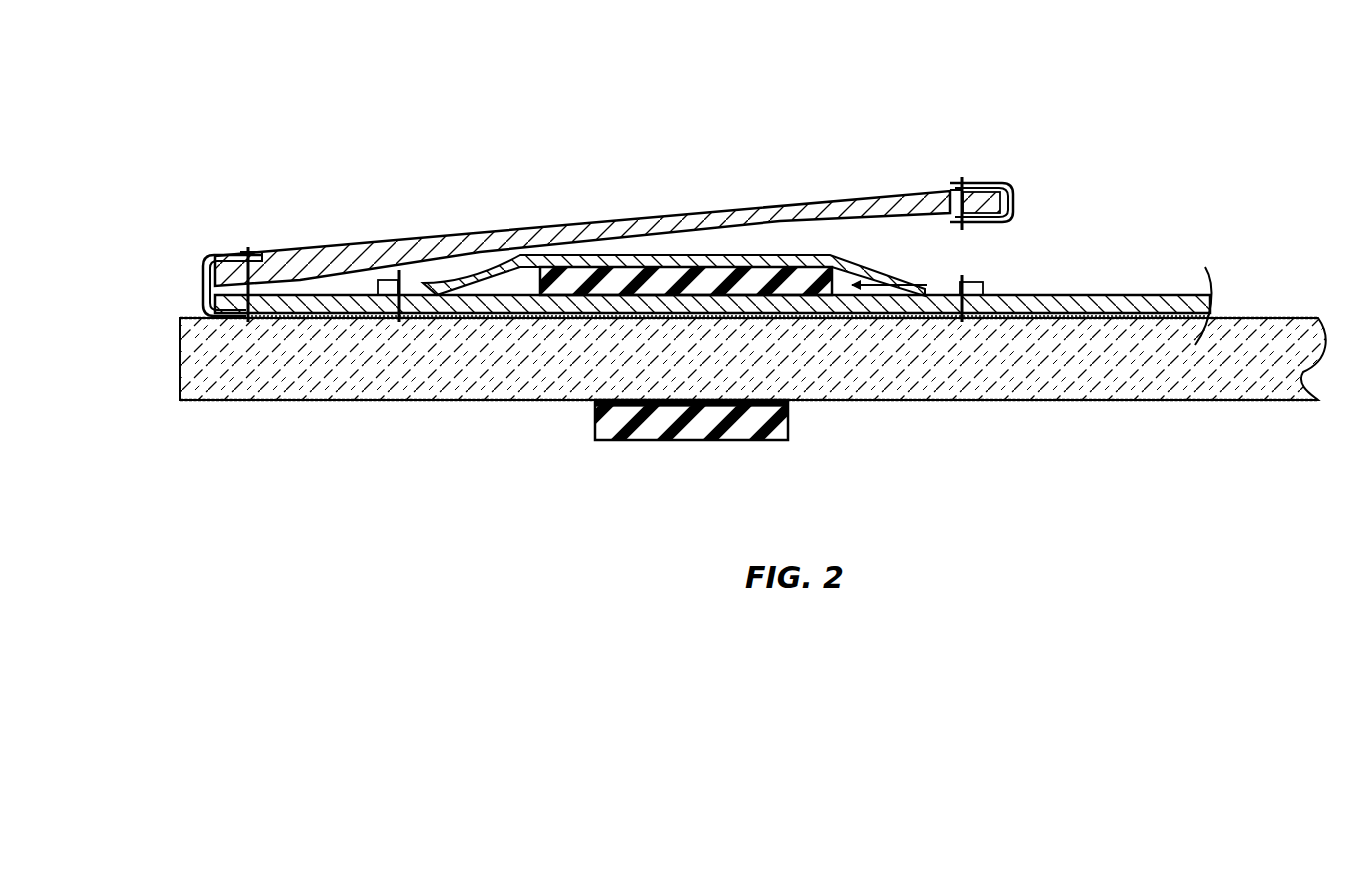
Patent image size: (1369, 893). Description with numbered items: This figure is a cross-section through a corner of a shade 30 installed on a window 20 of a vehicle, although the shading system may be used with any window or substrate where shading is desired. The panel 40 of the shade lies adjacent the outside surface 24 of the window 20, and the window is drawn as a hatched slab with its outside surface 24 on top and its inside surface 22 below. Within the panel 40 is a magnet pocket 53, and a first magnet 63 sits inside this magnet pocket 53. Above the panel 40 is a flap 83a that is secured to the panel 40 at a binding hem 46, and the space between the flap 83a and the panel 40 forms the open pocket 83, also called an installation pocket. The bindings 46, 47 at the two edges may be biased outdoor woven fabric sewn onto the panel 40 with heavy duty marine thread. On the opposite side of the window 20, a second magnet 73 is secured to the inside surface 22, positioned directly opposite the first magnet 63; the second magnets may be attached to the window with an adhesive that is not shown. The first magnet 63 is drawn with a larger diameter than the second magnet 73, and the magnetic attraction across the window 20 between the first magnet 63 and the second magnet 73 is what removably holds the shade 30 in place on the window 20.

The window 20 is at (1193, 372).
The inside surface 22 is at (1127, 402).
The outside surface 24 is at (1240, 335).
The shade 30 is at (156, 151).
The panel 40 is at (1124, 274).
The binding hem 46 is at (198, 282).
The binding 47 is at (1014, 192).
The magnet pocket 53 is at (918, 288).
The first magnet 63 is at (703, 282).
The second magnet 73 is at (760, 425).
The open pocket 83 is at (1102, 192).
The flap 83a is at (500, 226).